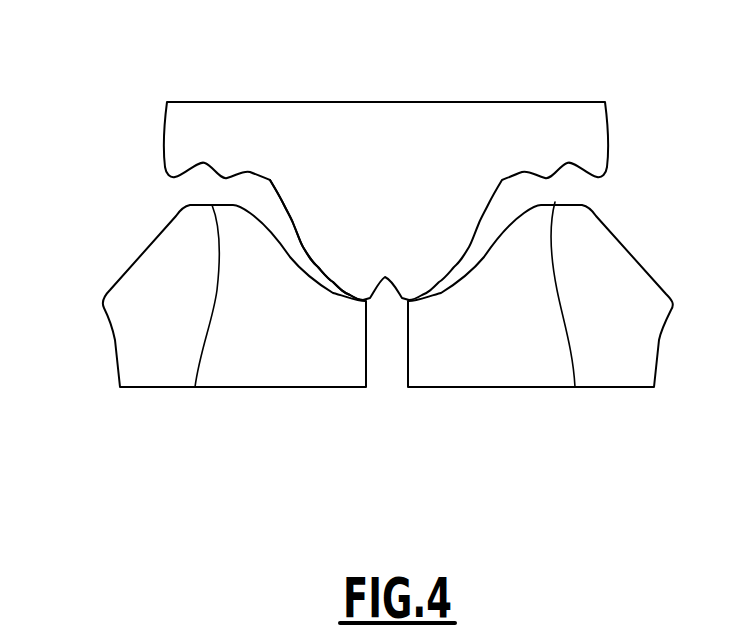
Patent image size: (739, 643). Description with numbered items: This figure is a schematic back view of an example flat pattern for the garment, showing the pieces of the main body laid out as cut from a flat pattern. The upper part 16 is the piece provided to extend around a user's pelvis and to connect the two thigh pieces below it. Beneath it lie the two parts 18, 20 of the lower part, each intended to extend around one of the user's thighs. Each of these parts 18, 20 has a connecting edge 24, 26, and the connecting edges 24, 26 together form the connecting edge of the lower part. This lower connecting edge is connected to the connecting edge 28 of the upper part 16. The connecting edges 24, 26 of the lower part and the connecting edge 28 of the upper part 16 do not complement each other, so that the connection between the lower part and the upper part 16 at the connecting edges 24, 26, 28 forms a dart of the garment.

The second part 16 is at (577, 128).
The part of the lower part 18 is at (630, 353).
The part of the lower part 20 is at (140, 354).
The connecting edge 24 is at (575, 387).
The connecting edge 26 is at (195, 387).
The connecting edge 28 is at (301, 239).